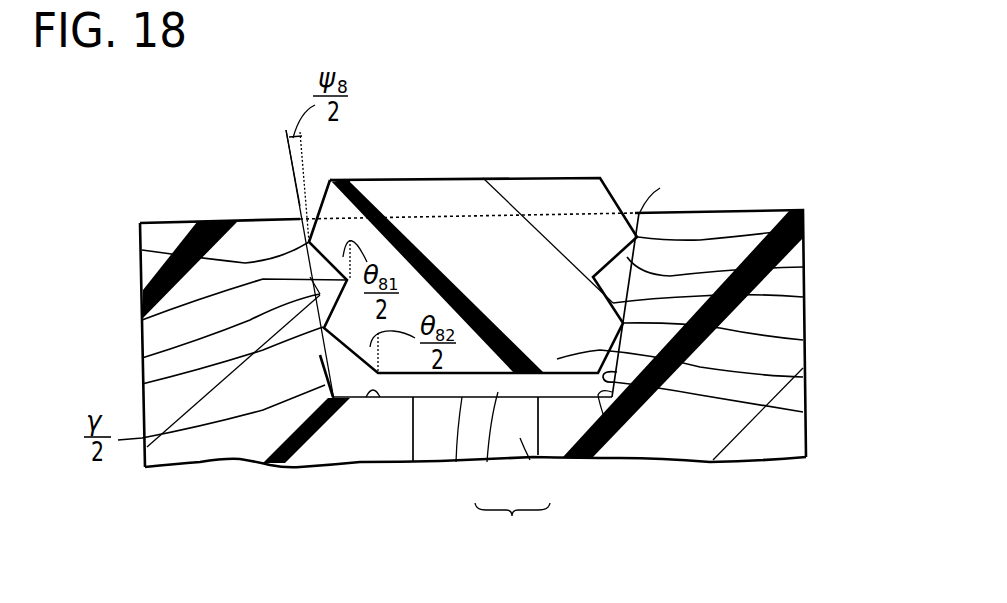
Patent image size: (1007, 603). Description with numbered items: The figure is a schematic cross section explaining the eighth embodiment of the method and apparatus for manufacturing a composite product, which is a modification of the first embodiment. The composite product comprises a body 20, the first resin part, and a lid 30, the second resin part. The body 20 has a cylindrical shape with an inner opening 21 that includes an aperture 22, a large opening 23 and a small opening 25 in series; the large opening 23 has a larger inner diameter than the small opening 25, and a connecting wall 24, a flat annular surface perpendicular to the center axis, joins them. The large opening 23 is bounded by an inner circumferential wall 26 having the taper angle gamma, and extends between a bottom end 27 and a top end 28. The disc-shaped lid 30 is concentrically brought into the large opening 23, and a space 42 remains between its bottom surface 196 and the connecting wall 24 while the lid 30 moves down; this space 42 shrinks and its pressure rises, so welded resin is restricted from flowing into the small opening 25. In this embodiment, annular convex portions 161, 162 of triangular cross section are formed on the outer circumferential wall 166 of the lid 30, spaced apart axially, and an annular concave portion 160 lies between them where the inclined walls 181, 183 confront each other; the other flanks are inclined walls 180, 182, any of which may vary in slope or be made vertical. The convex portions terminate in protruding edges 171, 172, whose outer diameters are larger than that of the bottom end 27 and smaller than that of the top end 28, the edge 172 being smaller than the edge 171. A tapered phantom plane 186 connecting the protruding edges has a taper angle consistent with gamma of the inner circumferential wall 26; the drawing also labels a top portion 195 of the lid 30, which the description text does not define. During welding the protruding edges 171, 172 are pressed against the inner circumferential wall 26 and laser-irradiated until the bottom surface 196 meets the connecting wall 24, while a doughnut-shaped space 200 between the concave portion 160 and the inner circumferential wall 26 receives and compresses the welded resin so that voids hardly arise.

The body 20 is at (773, 200).
The inner opening 21 is at (512, 525).
The aperture 22 is at (468, 222).
The large opening 23 is at (487, 462).
The connecting wall 24 is at (370, 397).
The small opening 25 is at (530, 460).
The inner circumferential wall 26 is at (803, 412).
The bottom end 27 is at (605, 420).
The top end 28 is at (640, 218).
The lid 30 is at (618, 172).
The space 42 is at (400, 388).
The annular concave portion 160 is at (142, 320).
The annular convex portion 161 is at (142, 250).
The annular convex portion 162 is at (142, 384).
The outer circumferential wall 166 is at (324, 182).
The protruding edge 171 is at (803, 230).
The protruding edge 172 is at (803, 340).
The inclined wall 180 is at (660, 188).
The inclined wall 181 is at (803, 267).
The inclined wall 182 is at (803, 377).
The inclined wall 183 is at (803, 297).
The tapered phantom plane 186 is at (295, 188).
The rake face 195 is at (507, 177).
The bottom surface 196 is at (456, 462).
The doughnut-shaped space 200 is at (142, 358).